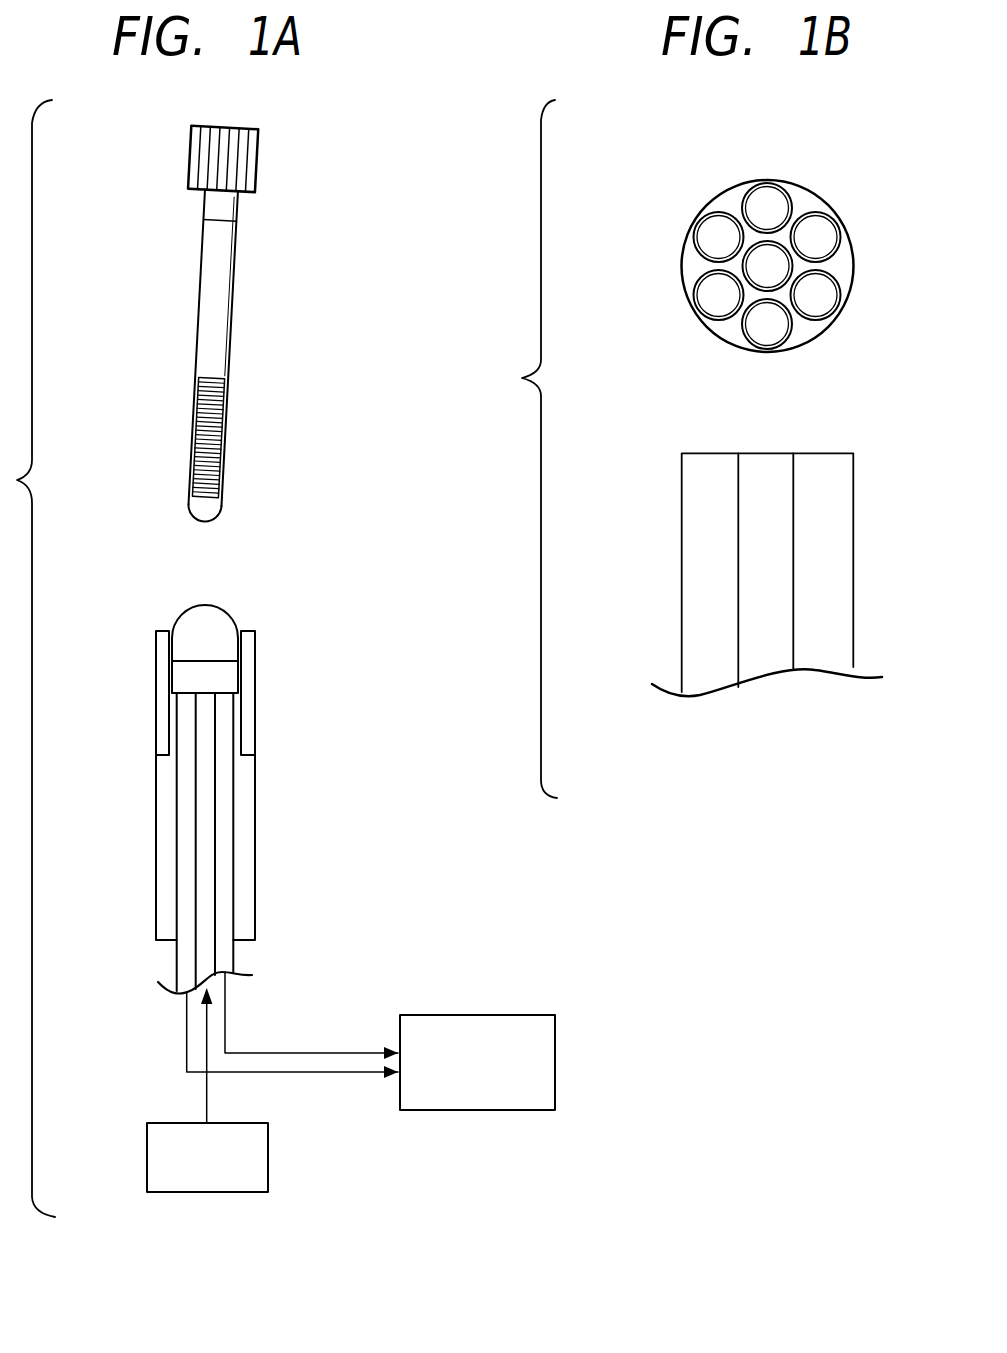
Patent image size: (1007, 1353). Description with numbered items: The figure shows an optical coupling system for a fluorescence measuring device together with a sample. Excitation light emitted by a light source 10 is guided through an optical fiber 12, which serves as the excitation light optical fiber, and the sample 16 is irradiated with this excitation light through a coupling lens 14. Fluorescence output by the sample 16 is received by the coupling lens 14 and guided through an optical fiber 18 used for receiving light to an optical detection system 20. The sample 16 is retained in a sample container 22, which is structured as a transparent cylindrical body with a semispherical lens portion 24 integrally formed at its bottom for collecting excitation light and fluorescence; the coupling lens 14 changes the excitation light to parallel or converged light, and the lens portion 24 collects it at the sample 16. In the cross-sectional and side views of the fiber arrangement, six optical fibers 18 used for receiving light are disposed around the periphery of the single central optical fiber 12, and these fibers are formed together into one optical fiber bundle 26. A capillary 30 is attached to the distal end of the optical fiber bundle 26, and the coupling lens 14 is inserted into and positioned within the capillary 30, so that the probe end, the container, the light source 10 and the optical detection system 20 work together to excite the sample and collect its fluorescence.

In FIG. 1A, the light source 10 is at (268, 1160).
In FIG. 1A, the optical fiber 12 is at (208, 890).
In FIG. 1B, the optical fiber 12 is at (757, 267).
In FIG. 1A, the coupling lens 14 is at (215, 612).
In FIG. 1A, the sample 16 is at (213, 447).
In FIG. 1A, the optical fiber 18 is at (187, 847).
In FIG. 1B, the optical fiber 18 is at (767, 197).
In FIG. 1A, the optical detection system 20 is at (480, 1110).
In FIG. 1A, the sample container 22 is at (232, 303).
In FIG. 1A, the semispherical lens portion 24 is at (202, 510).
In FIG. 1A, the optical fiber bundle 26 is at (176, 813).
In FIG. 1B, the optical fiber bundle 26 is at (684, 240).
In FIG. 1A, the capillary 30 is at (256, 728).